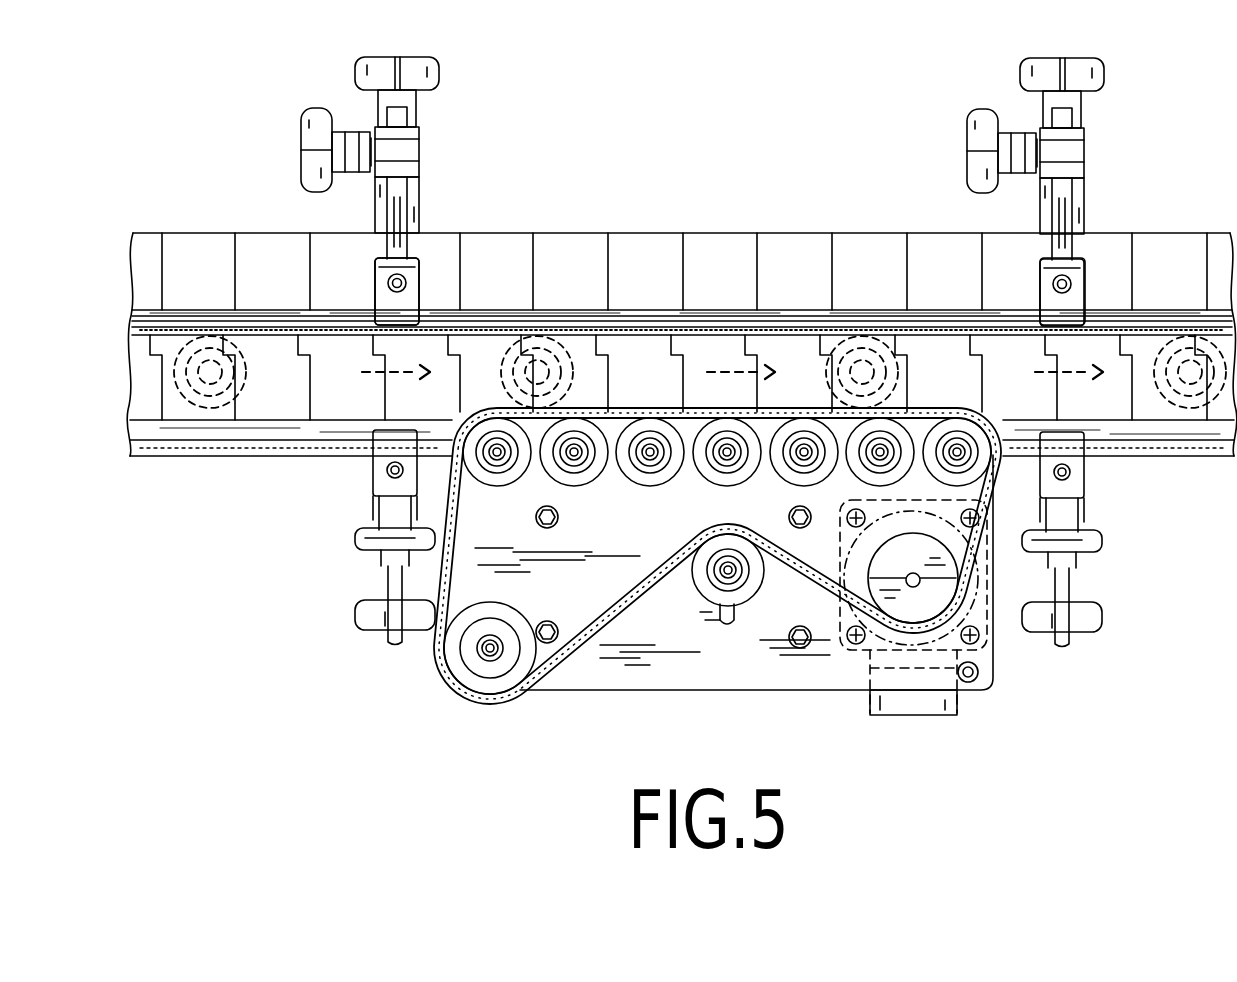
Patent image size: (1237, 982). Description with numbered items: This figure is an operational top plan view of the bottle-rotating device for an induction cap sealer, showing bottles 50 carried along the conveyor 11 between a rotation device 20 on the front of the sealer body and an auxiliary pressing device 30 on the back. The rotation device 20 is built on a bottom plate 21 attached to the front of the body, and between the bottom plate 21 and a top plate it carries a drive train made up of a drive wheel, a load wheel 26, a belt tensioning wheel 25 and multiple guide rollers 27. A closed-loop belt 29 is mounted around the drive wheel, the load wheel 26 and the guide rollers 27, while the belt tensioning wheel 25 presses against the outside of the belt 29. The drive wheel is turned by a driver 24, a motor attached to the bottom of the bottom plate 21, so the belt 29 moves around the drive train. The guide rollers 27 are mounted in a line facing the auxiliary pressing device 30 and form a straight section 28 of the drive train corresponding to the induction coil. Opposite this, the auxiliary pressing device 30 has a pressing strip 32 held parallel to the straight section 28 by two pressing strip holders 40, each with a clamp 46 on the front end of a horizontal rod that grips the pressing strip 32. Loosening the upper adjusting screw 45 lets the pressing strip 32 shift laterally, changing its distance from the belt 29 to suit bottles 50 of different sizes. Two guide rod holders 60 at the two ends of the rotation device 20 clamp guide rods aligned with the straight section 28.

The conveyor 11 is at (853, 262).
The rotation device 20 is at (750, 515).
The bottom plate 21 is at (687, 680).
The driver 24 is at (888, 633).
The belt tensioning wheel 25 is at (740, 597).
The load wheel 26 is at (513, 618).
The guide rollers 27 is at (712, 478).
The straight section 28 is at (717, 512).
The belt 29 is at (560, 655).
The auxiliary pressing device 30 is at (264, 288).
The pressing strip 32 is at (625, 328).
The pressing strip holders 40 is at (704, 191).
The upper adjusting screw 45 is at (312, 145).
The clamp 46 is at (405, 296).
The bottles 50 is at (218, 397).
The guide rod holders 60 is at (322, 570).